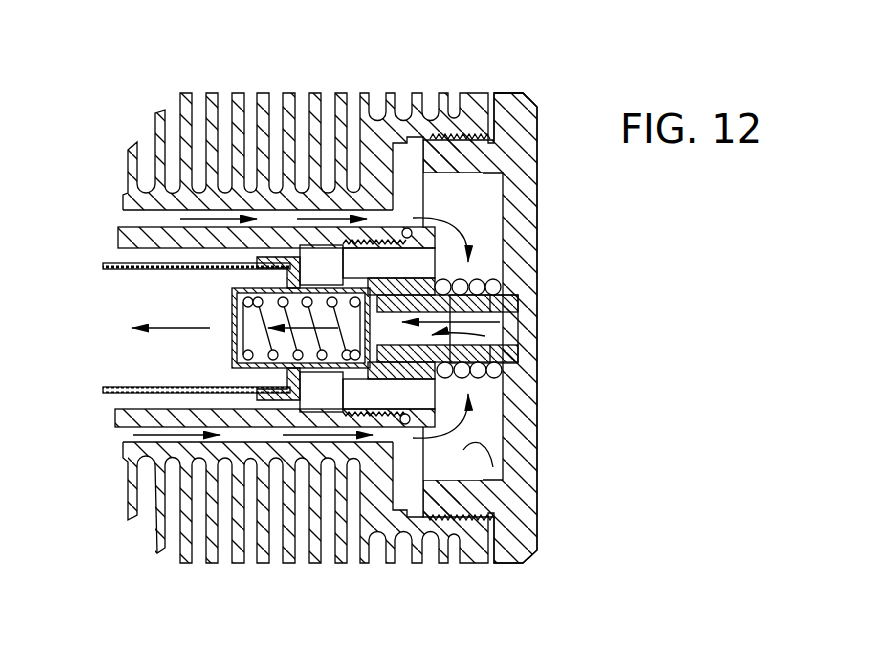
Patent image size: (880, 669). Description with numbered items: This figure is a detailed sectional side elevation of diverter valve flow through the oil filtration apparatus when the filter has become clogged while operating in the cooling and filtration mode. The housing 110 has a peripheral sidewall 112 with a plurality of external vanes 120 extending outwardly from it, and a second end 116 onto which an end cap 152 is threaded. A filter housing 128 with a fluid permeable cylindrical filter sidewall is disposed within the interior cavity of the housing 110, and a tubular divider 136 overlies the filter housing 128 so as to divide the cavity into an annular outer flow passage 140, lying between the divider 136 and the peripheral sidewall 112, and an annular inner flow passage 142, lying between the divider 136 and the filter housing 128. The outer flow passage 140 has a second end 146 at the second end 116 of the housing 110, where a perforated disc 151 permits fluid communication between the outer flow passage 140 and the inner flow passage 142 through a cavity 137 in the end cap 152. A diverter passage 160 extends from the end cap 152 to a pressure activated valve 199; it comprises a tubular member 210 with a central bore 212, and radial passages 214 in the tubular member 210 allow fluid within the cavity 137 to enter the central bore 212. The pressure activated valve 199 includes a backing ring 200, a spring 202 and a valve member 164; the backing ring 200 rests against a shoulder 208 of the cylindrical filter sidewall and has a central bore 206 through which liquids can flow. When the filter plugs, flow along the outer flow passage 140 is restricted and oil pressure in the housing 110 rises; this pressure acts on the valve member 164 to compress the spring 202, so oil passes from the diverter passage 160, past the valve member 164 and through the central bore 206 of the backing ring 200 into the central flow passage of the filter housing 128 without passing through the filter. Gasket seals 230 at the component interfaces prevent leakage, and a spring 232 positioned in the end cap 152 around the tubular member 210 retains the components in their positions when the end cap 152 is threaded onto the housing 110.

The housing 110 is at (358, 588).
The peripheral sidewall 112 is at (125, 205).
The second end 116 is at (473, 95).
The external vanes 120 is at (182, 93).
The filter housing 128 is at (125, 418).
The tubular divider 136 is at (120, 237).
The cavity 137 is at (505, 470).
The outer flow passage 140 is at (127, 217).
The inner flow passage 142 is at (118, 390).
The second end of outer flow passage 146 is at (383, 217).
The perforated disc 151 is at (417, 153).
The end cap 152 is at (523, 533).
The diverter passage 160 is at (470, 388).
The valve member 164 is at (490, 480).
The pressure activated valve 199 is at (318, 385).
The backing ring 200 is at (240, 365).
The spring 202 is at (290, 287).
The central bore 206 is at (235, 320).
The shoulder 208 is at (237, 360).
The tubular member 210 is at (480, 310).
The central bore 212 is at (477, 323).
The radial passages 214 is at (493, 292).
The gasket seals 230 is at (487, 100).
The spring 232 is at (480, 283).